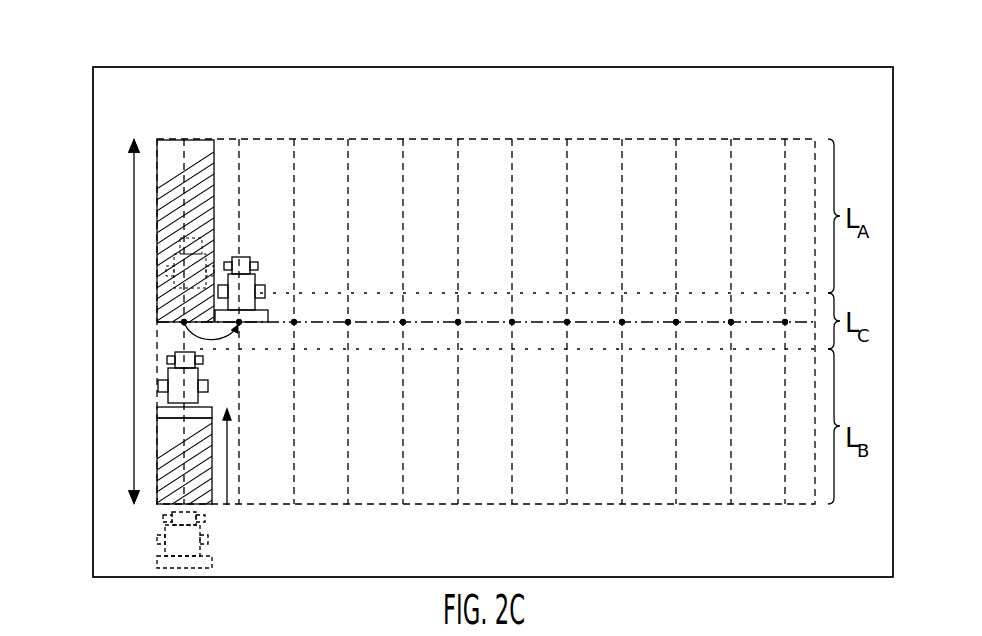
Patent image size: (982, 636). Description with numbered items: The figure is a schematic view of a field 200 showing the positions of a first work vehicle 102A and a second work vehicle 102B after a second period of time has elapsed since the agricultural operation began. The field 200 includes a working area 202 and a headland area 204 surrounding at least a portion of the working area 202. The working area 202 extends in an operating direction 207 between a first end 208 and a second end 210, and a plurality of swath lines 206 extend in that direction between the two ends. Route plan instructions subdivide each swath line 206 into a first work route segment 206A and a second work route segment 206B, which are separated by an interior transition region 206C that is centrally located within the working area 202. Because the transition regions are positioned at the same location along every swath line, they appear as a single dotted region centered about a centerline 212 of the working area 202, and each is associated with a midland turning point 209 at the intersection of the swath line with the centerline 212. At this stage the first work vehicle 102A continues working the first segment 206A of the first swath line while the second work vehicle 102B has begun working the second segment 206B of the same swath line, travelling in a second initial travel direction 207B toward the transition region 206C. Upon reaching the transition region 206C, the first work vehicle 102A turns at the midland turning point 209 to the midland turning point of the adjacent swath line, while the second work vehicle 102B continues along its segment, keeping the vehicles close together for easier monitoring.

The field 200 is at (804, 65).
The working area 202 is at (762, 138).
The headland area 204 is at (730, 84).
The swath lines 206 is at (608, 177).
The first work route segment 206A is at (239, 168).
The second work route segment 206B is at (188, 477).
The interior transition region 206C is at (157, 316).
The operating direction 207 is at (134, 262).
The second initial travel direction 207B is at (230, 476).
The first end 208 is at (135, 132).
The midland turning point 209 is at (182, 326).
The second end 210 is at (134, 513).
The centerline 212 is at (800, 322).
The first work vehicle 102A is at (248, 286).
The second work vehicle 102B is at (178, 387).